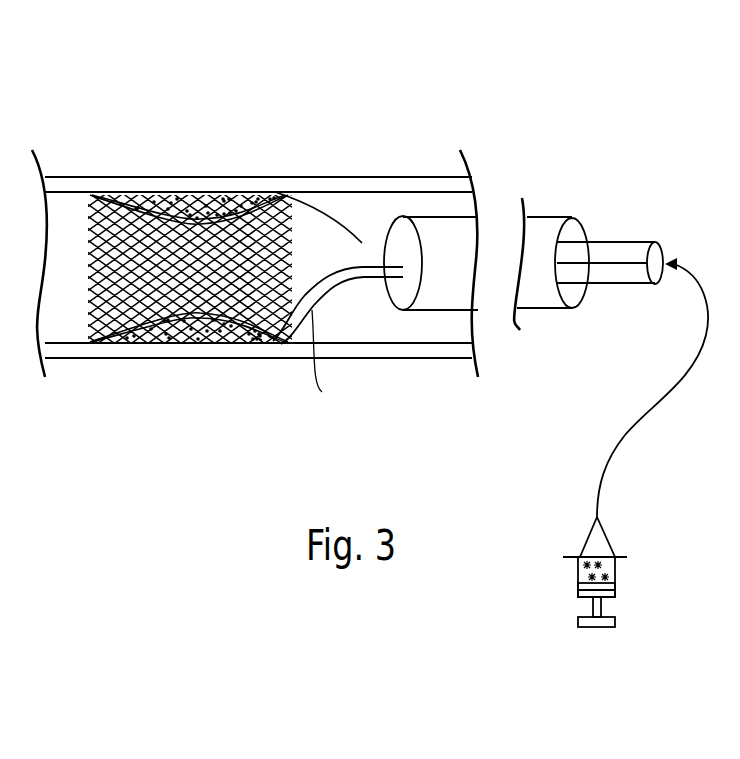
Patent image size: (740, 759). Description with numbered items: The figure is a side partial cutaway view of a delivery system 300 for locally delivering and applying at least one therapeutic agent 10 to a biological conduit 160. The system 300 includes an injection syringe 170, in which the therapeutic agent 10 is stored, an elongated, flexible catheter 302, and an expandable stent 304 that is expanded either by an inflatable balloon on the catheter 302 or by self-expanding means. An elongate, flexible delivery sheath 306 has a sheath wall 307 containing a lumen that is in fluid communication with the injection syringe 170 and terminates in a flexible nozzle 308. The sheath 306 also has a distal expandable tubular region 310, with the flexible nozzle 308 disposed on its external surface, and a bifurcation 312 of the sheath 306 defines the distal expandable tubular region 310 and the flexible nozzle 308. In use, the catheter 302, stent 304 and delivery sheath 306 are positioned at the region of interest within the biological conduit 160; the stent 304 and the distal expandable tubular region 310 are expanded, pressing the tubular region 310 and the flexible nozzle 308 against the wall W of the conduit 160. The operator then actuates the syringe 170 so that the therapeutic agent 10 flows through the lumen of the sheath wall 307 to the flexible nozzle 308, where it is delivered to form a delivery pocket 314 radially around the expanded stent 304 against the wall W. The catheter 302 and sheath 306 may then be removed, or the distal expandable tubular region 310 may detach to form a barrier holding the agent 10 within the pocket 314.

The delivery system 300 is at (455, 94).
The biological conduit 160 is at (70, 183).
The wall W is at (128, 192).
The therapeutic agent 10 is at (172, 200).
The expandable stent 304 is at (312, 195).
The delivery pocket 314 is at (245, 198).
The distal expandable tubular region 310 is at (262, 195).
The flexible nozzle 308 is at (254, 336).
The bifurcation 312 is at (272, 336).
The delivery sheath 306 is at (362, 243).
The sheath wall 307 is at (360, 280).
The catheter 302 is at (543, 215).
The injection syringe 170 is at (577, 572).